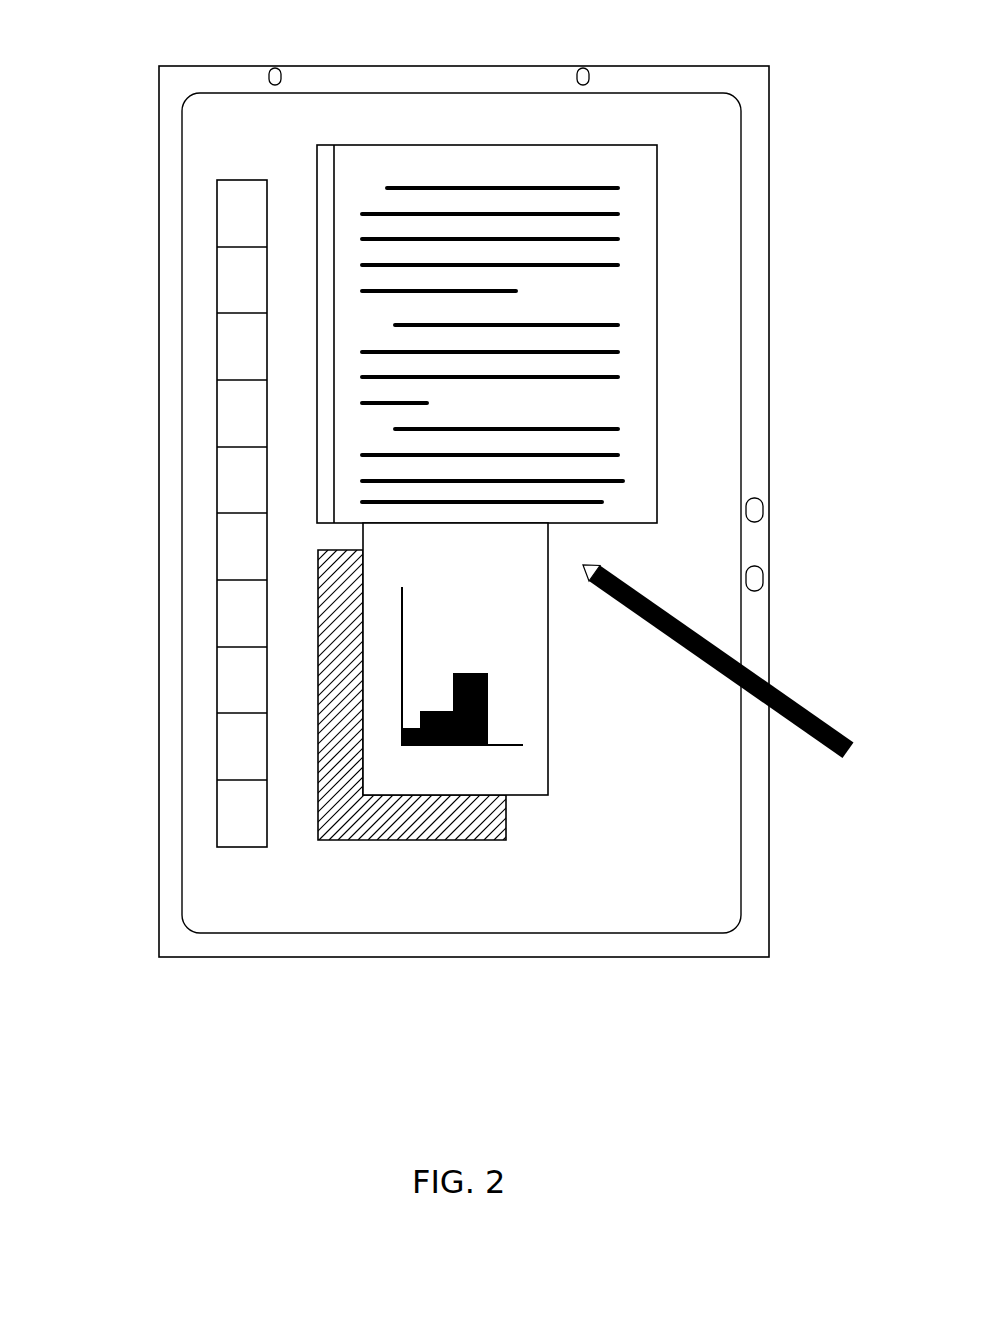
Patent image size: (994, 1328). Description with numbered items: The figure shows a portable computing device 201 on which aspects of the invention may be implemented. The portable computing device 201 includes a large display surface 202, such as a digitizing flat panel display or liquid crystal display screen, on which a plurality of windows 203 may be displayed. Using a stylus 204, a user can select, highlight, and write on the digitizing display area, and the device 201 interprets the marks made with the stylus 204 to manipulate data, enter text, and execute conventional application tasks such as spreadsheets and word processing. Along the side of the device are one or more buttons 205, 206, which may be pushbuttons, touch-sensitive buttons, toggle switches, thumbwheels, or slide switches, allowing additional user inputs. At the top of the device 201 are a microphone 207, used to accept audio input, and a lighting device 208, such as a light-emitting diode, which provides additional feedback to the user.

The portable computing device 201 is at (108, 844).
The display surface 202 is at (183, 573).
The windows 203 is at (345, 847).
The stylus 204 is at (810, 737).
The button 205 is at (774, 509).
The button 206 is at (774, 578).
The microphone 207 is at (292, 74).
The lighting device 208 is at (600, 74).